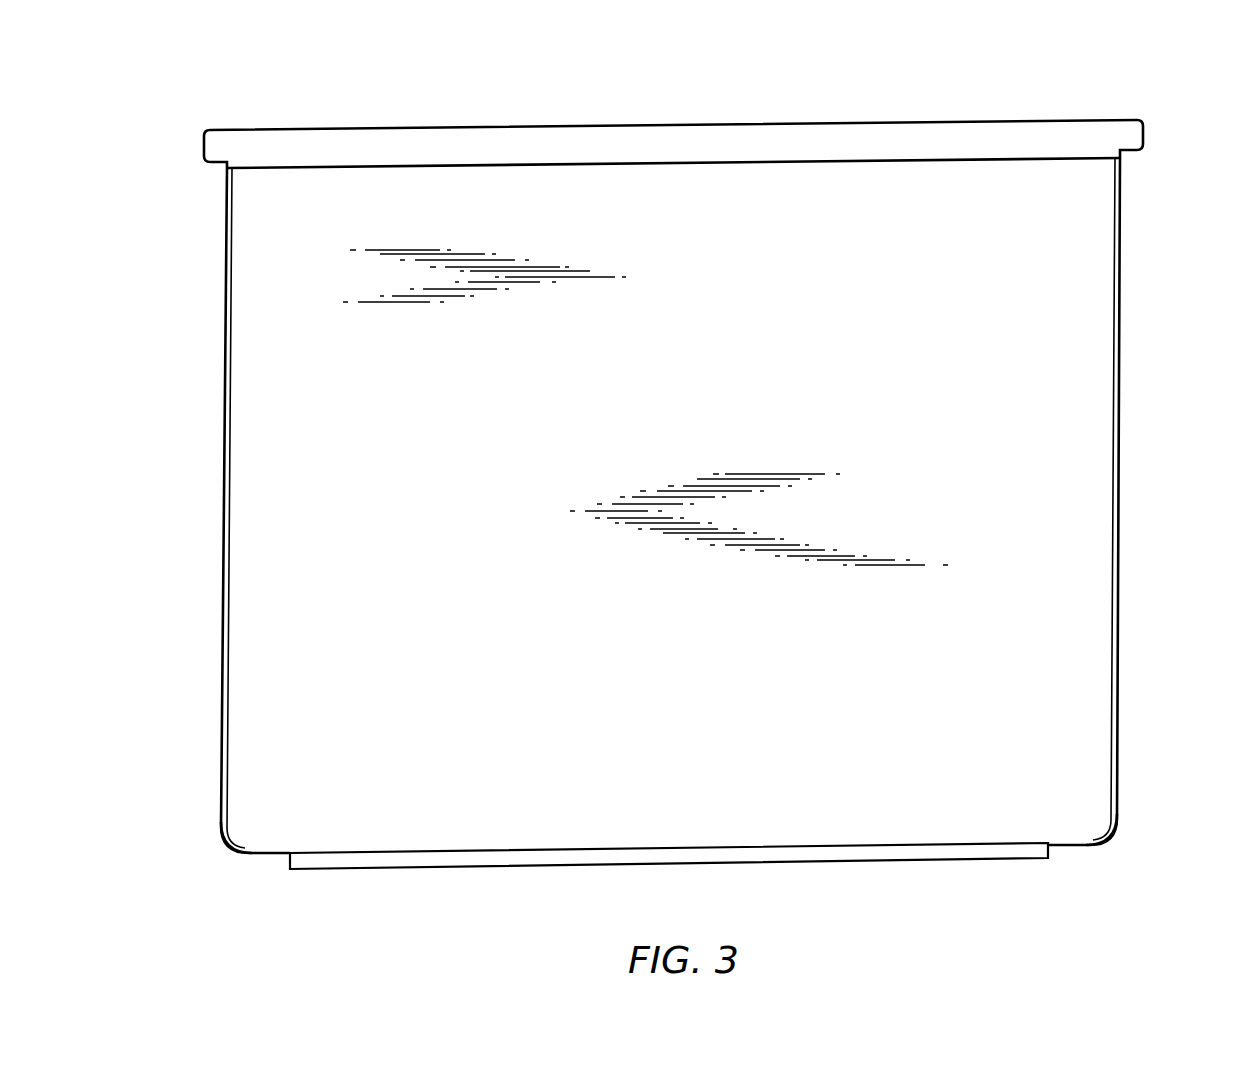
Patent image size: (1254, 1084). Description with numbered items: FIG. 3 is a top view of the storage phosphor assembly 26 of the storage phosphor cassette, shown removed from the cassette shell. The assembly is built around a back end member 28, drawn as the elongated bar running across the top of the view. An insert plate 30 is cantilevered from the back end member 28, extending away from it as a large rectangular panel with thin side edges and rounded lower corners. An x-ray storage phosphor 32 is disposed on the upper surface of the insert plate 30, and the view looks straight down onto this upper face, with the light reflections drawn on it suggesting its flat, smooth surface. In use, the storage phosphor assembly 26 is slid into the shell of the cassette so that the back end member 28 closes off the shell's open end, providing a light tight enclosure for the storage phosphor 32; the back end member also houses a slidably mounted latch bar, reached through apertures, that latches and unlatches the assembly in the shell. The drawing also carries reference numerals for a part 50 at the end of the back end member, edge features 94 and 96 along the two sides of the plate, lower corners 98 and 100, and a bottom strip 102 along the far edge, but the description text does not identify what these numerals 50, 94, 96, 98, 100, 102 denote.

The storage phosphor assembly 26 is at (1118, 655).
The back end member 28 is at (558, 128).
The insert plate 30 is at (208, 510).
The x-ray storage phosphor 32 is at (1142, 501).
The top cover 50 is at (1093, 118).
The left edge flange 94 is at (222, 458).
The right edge flange 96 is at (1120, 462).
The lower left corner 98 is at (233, 853).
The lower right corner 100 is at (1104, 843).
The bottom strip 102 is at (470, 866).